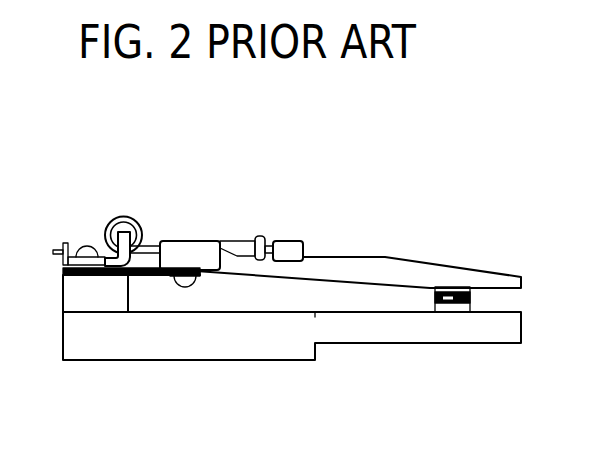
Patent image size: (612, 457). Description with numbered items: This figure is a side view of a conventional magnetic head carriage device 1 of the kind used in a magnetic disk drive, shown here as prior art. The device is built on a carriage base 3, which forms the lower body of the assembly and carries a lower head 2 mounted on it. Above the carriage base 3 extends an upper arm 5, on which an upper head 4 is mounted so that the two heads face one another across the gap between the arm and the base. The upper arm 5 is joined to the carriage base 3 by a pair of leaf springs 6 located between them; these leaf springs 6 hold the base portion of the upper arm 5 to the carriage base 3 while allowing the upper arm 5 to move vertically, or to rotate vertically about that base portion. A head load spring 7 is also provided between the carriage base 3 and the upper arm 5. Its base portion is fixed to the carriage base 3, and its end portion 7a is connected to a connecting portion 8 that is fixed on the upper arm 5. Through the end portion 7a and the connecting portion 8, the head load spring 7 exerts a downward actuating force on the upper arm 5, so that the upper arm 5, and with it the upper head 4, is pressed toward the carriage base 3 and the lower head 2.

The magnetic head carriage device 1 is at (360, 139).
The lower head 2 is at (451, 312).
The carriage base 3 is at (214, 360).
The upper head 4 is at (452, 288).
The upper arm 5 is at (387, 259).
The leaf springs 6 is at (150, 274).
The head load spring 7 is at (145, 222).
The end portion 7a is at (272, 235).
The connecting portion 8 is at (258, 233).